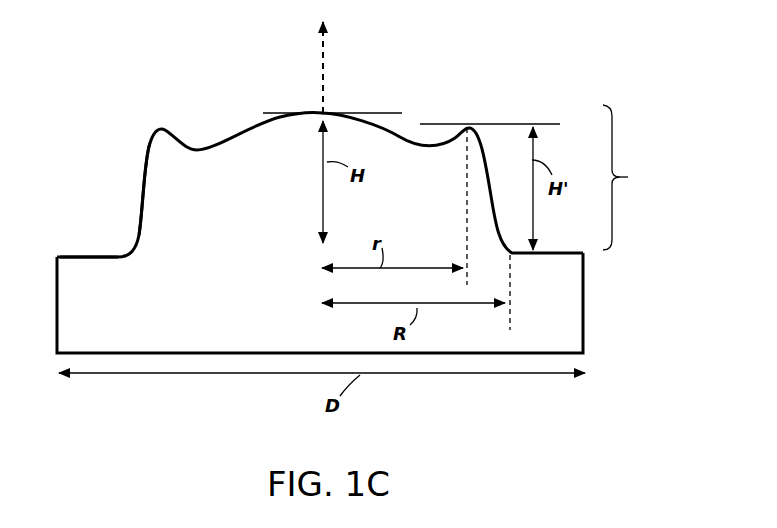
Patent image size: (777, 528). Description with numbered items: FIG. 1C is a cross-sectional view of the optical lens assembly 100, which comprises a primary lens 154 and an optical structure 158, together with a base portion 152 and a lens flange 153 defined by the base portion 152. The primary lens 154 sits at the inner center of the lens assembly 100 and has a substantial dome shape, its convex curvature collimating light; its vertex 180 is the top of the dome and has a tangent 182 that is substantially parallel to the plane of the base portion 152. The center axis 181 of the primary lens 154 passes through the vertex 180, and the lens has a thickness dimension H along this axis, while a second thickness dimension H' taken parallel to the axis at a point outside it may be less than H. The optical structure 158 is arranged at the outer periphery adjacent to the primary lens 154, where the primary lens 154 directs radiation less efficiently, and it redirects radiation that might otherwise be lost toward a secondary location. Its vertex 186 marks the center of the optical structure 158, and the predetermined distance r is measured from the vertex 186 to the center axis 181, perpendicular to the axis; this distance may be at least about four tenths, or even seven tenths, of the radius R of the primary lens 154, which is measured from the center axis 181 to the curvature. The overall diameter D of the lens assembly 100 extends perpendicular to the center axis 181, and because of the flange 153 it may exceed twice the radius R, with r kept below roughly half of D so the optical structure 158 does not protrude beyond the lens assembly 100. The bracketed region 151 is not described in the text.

The optical lens assembly 100 is at (127, 24).
The semiconductor layer stack 151 is at (635, 177).
The base portion 152 is at (138, 327).
The lens flange 153 is at (85, 252).
The primary lens 154 is at (289, 207).
The optical structure 158 is at (157, 150).
The vertex 180 is at (318, 115).
The center axis 181 is at (328, 43).
The tangent 182 is at (373, 112).
The vertex of the optical structure 186 is at (468, 125).